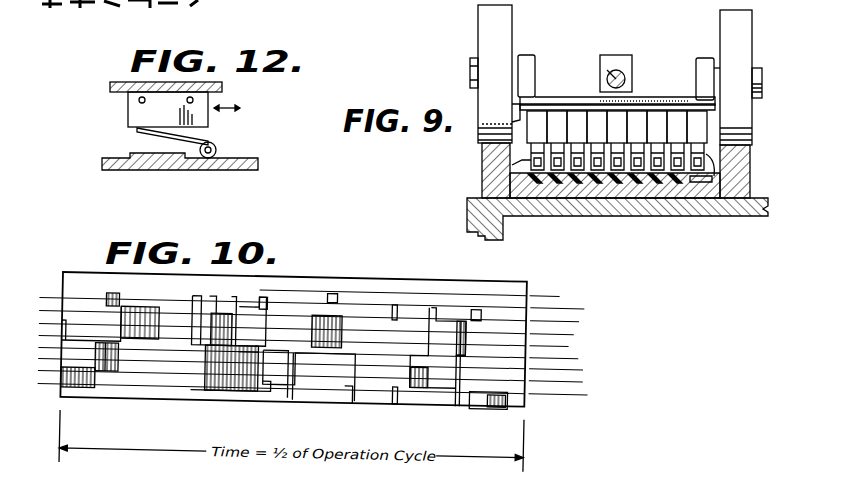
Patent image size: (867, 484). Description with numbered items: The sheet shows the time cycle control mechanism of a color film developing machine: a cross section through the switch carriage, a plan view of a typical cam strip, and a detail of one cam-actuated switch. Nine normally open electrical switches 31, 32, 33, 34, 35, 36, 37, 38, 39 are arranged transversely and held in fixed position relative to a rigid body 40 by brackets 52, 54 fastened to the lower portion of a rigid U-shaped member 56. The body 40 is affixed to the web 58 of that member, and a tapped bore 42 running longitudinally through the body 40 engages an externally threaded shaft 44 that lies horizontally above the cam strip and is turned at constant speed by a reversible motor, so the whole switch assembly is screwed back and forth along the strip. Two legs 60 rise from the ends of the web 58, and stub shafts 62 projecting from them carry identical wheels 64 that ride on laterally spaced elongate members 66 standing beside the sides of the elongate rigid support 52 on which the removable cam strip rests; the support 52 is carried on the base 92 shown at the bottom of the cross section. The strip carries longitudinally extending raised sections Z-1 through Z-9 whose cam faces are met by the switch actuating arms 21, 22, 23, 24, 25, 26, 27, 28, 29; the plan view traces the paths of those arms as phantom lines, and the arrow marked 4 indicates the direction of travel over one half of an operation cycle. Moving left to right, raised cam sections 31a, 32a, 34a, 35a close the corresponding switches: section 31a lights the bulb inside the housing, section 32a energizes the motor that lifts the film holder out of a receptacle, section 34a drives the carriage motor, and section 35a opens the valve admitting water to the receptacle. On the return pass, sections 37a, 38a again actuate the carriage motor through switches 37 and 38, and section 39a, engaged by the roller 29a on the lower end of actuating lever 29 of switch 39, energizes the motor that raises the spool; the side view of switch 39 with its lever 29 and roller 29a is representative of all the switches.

In FIG. 10, the direction of rotation arrow 4 is at (230, 405).
In FIG. 9, the actuating arm 21 is at (678, 172).
In FIG. 9, the actuating arm 22 is at (658, 172).
In FIG. 9, the actuating lever 23 is at (638, 172).
In FIG. 9, the actuating lever 24 is at (618, 172).
In FIG. 9, the actuating lever 25 is at (598, 172).
In FIG. 9, the actuating lever 26 is at (578, 172).
In FIG. 9, the actuating lever 27 is at (558, 172).
In FIG. 9, the actuating lever 28 is at (538, 172).
In FIG. 12, the actuating lever 29 is at (210, 139).
In FIG. 9, the actuating lever 29 is at (512, 165).
In FIG. 12, the roller 29a is at (217, 151).
In FIG. 9, the electrical switch 31 is at (697, 127).
In FIG. 9, the electrical switch 32 is at (677, 127).
In FIG. 9, the electrical switch 33 is at (657, 127).
In FIG. 9, the electrical switch 34 is at (637, 127).
In FIG. 9, the electrical switch 35 is at (617, 127).
In FIG. 9, the electrical switch 36 is at (597, 127).
In FIG. 9, the electrical switch 37 is at (577, 127).
In FIG. 9, the electrical switch 38 is at (557, 127).
In FIG. 12, the electrical switch 39 is at (168, 109).
In FIG. 9, the electrical switch 39 is at (537, 127).
In FIG. 9, the rigid body 40 is at (628, 55).
In FIG. 9, the tapped bore 42 is at (625, 79).
In FIG. 9, the externally threaded shaft 44 is at (607, 70).
In FIG. 9, the elongate rigid support 52 is at (519, 108).
In FIG. 9, the bracket 54 is at (714, 107).
In FIG. 9, the U-shaped member 56 is at (706, 70).
In FIG. 9, the web 58 is at (578, 96).
In FIG. 9, the leg 60 is at (535, 62).
In FIG. 9, the stub shaft 62 is at (512, 76).
In FIG. 9, the wheel 64 is at (478, 23).
In FIG. 9, the elongate member 66 is at (495, 155).
In FIG. 9, the base 92 is at (747, 217).
In FIG. 9, the longitudinally extending section Z-1 is at (698, 172).
In FIG. 10, the longitudinally extending section Z-1 is at (373, 280).
In FIG. 9, the longitudinally extending section Z-9 is at (518, 172).
In FIG. 10, the longitudinally extending section Z-9 is at (270, 398).
In FIG. 10, the raised cam section 31a is at (338, 290).
In FIG. 10, the raised cam section 32a is at (110, 298).
In FIG. 10, the raised cam section 34a is at (438, 333).
In FIG. 10, the raised cam section 35a is at (327, 342).
In FIG. 10, the raised cam section 37a is at (150, 358).
In FIG. 10, the raised cam section 38a is at (165, 368).
In FIG. 10, the raised cam section 39a is at (245, 325).